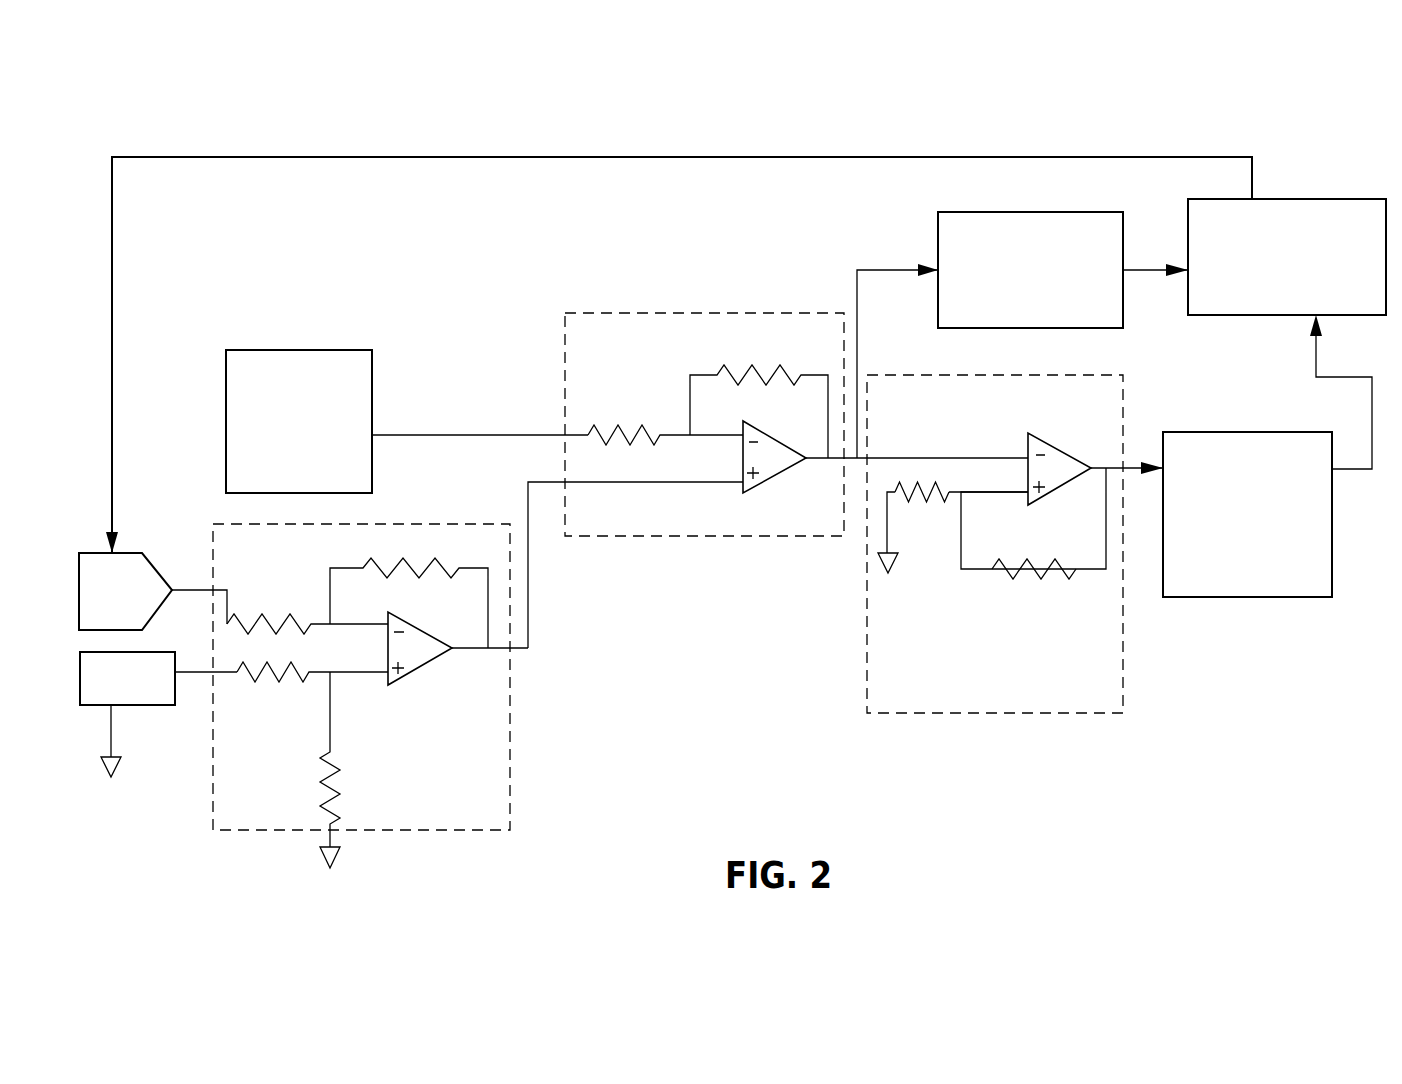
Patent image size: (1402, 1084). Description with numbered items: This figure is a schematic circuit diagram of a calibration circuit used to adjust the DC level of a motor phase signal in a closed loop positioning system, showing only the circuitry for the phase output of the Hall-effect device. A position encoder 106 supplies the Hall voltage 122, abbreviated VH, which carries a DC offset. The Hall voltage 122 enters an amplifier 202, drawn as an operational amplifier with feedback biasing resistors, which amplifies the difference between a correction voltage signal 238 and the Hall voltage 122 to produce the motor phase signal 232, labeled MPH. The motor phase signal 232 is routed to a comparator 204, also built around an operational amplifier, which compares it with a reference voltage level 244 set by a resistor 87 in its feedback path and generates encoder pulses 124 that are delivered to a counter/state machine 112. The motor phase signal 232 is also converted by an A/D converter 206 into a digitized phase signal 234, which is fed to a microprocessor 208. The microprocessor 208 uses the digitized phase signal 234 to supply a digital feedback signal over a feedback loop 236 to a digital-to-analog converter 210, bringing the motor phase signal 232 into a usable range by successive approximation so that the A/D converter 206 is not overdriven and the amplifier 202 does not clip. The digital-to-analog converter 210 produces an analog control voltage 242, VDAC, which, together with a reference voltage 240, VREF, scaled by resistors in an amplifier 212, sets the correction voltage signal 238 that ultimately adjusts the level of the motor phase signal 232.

The feedback loop 236 is at (679, 329).
The digitized phase signal 234 is at (1155, 223).
The A/D converter 206 is at (1052, 314).
The microprocessor 208 is at (1310, 306).
The encoder pulses 124 is at (1191, 406).
The counter/state machine 112 is at (1270, 586).
The position encoder 106 is at (320, 481).
The Hall voltage 122 is at (480, 393).
The analog control voltage 242 is at (176, 545).
The digital-to-analog converter 210 is at (140, 618).
The reference voltage 240 is at (158, 714).
The motor phase signal 232 is at (917, 421).
The reference voltage level 244 is at (994, 521).
The hysteresis resistor 87 is at (1034, 590).
The correction voltage signal 238 is at (644, 565).
The amplifier 202 is at (815, 526).
The comparator 204 is at (995, 544).
The amplifier 212 is at (498, 824).